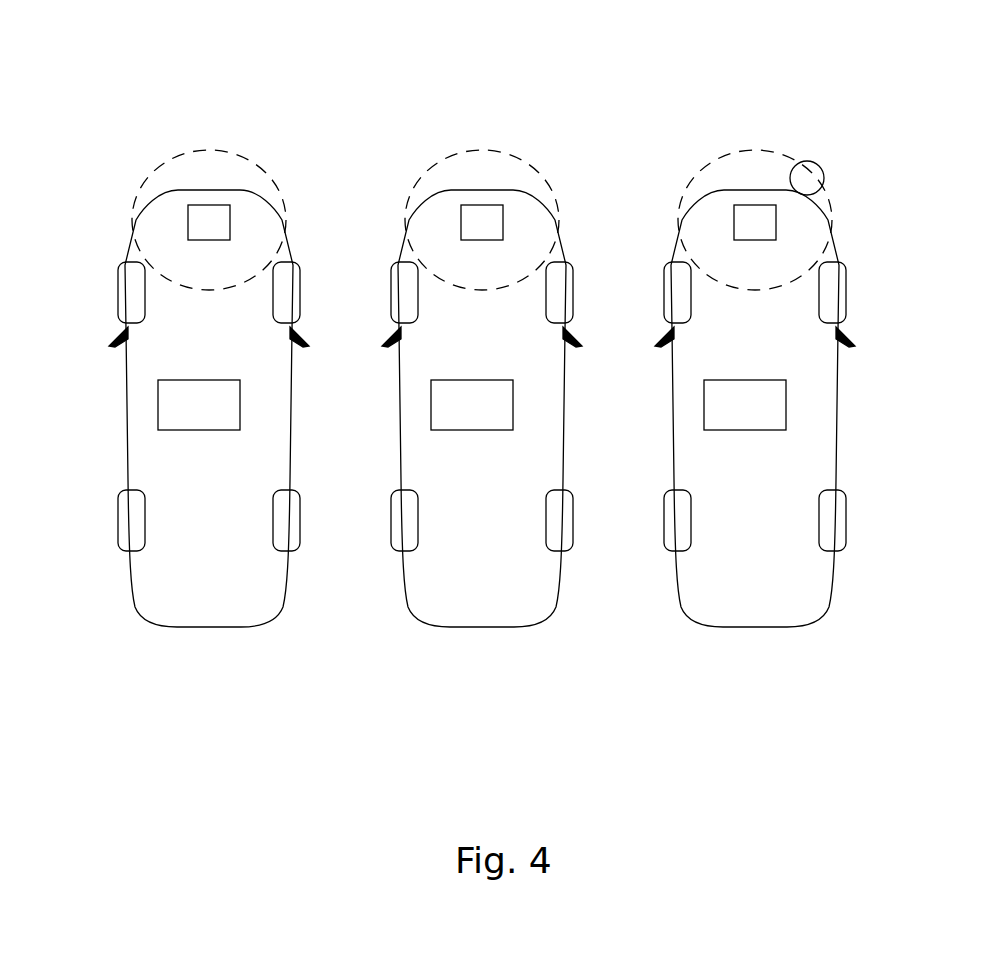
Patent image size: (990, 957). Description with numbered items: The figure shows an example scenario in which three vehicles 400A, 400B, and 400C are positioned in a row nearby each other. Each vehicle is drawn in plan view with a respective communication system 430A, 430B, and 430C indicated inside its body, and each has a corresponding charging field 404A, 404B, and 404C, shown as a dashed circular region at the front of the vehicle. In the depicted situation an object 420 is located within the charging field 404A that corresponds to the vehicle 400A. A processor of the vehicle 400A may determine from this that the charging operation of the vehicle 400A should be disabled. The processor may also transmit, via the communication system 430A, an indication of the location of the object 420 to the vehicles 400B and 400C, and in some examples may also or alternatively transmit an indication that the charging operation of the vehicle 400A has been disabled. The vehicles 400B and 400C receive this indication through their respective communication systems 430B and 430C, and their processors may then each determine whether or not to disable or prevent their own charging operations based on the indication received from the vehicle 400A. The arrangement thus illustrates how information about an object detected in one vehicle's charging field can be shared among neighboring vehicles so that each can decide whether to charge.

The charging field 404A is at (755, 164).
The charging field 404B is at (482, 164).
The charging field 404C is at (209, 164).
The vehicle 400A is at (755, 466).
The vehicle 400B is at (482, 466).
The vehicle 400C is at (209, 466).
The communication system 430A is at (745, 405).
The communication system 430B is at (472, 405).
The communication system 430C is at (199, 405).
The object 420 is at (822, 184).